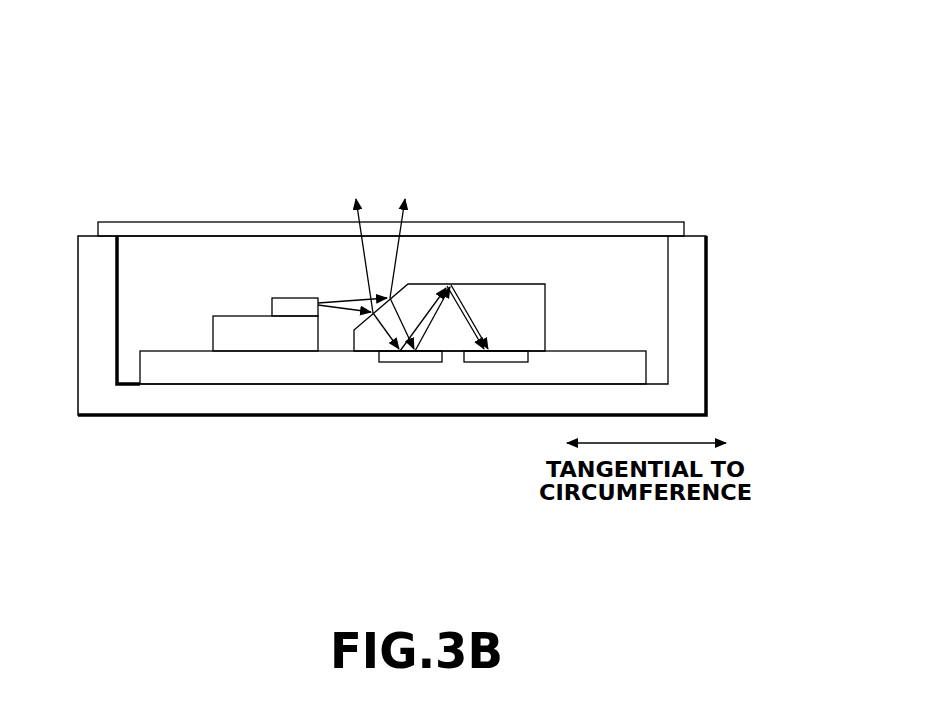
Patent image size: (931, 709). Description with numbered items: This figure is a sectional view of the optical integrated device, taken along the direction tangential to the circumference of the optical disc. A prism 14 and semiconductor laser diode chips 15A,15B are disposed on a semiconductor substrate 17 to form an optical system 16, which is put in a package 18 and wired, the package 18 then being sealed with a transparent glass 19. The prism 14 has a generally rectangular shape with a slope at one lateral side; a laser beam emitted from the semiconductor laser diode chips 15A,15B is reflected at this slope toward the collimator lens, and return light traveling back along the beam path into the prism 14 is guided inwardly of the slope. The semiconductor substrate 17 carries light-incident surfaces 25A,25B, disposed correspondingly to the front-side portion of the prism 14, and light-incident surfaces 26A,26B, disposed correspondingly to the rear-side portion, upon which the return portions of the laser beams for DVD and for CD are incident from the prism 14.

The prism 14 is at (513, 295).
The semiconductor laser diode chips 15A,15B is at (290, 298).
The optical system 16 is at (606, 247).
The semiconductor substrate 17 is at (165, 363).
The package 18 is at (256, 398).
The transparent glass 19 is at (141, 233).
The light-incident surfaces 25A,25B is at (417, 355).
The light-incident surfaces 26A,26B is at (495, 355).